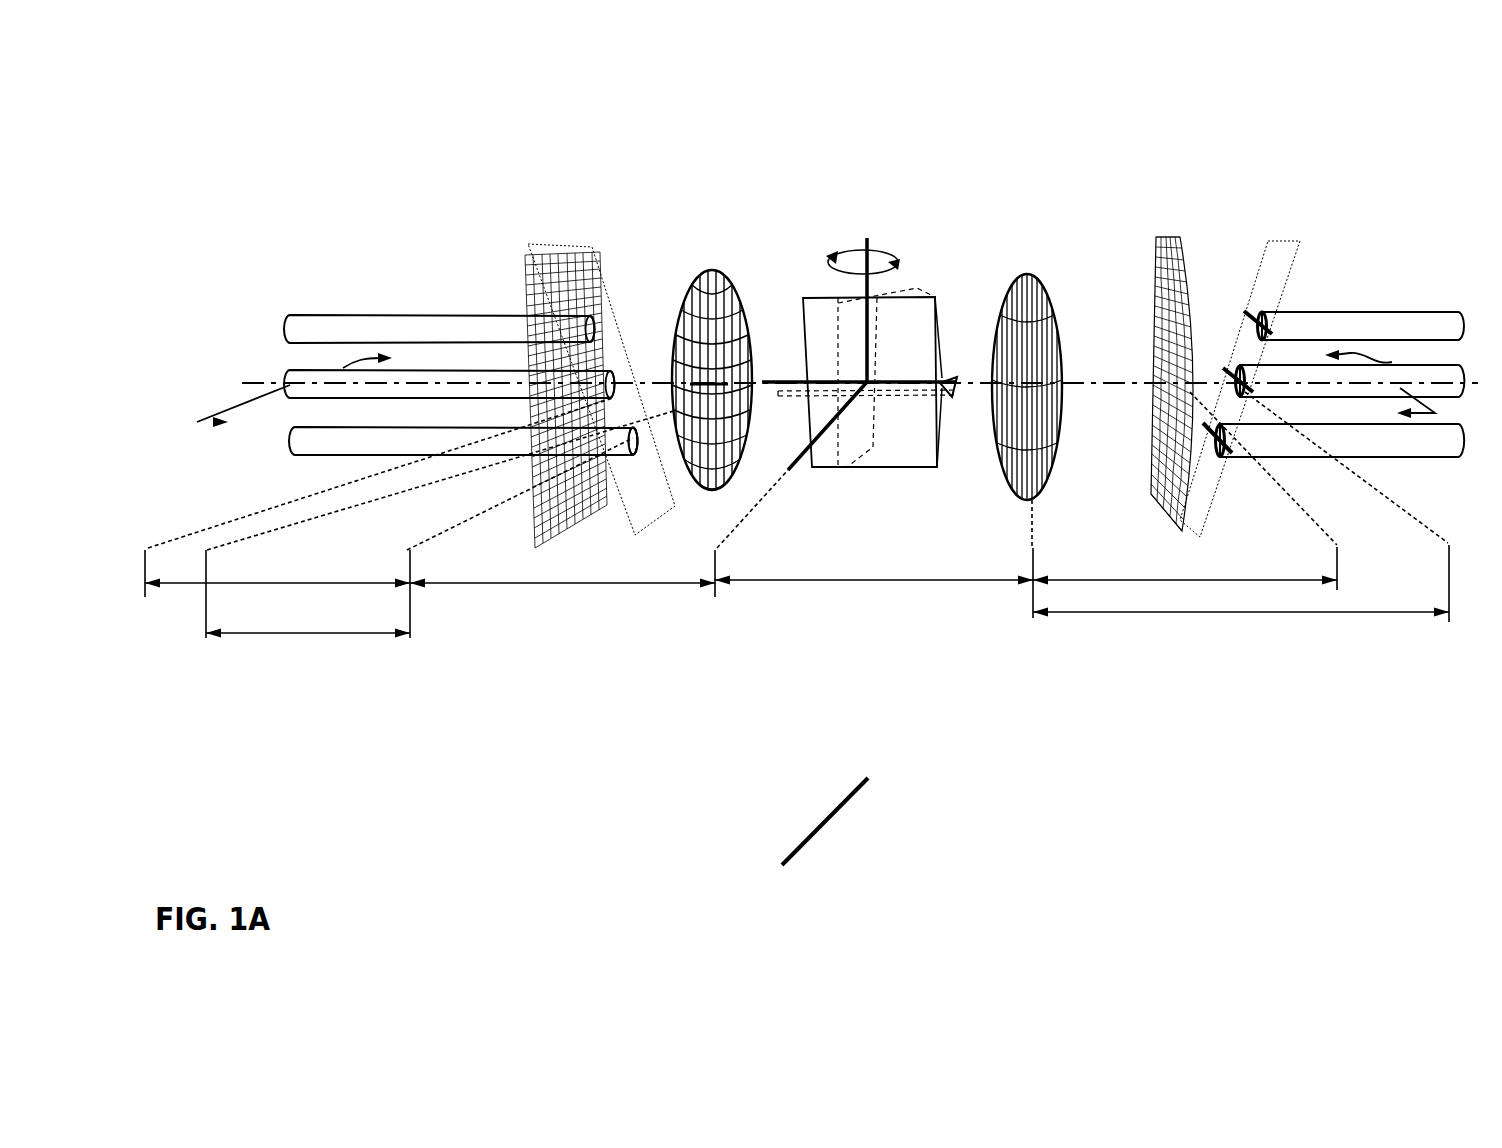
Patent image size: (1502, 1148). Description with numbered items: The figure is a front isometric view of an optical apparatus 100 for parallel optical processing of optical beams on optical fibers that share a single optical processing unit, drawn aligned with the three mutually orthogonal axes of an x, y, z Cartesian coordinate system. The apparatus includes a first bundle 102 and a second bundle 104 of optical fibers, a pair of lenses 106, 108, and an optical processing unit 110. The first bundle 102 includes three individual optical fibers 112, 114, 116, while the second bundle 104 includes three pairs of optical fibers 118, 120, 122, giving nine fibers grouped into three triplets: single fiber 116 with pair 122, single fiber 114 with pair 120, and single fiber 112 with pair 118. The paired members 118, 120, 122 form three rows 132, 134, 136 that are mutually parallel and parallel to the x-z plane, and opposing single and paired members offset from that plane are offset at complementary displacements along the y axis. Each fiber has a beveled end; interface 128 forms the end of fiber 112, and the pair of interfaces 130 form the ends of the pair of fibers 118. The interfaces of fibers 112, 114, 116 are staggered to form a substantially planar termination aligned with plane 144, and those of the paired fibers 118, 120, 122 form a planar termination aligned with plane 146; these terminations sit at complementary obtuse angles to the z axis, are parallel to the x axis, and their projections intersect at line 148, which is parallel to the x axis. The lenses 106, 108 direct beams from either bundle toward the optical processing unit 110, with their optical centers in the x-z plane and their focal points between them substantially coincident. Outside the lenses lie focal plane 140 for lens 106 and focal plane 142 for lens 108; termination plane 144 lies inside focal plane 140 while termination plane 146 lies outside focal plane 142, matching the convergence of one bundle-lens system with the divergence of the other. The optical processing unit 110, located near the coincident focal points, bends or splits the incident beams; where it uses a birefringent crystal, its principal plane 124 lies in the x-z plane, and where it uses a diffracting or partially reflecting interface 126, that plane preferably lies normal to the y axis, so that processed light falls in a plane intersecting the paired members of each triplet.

The optical apparatus 100 is at (447, 725).
The first bundle 102 is at (405, 265).
The second bundle 104 is at (1371, 262).
The lens 106 is at (718, 272).
The lens 108 is at (1030, 275).
The optical processing unit 110 is at (873, 468).
The optical fiber 112 is at (377, 437).
The optical fiber 114 is at (420, 380).
The optical fiber 116 is at (440, 330).
The pair of optical fibers 118 is at (1406, 322).
The pair of optical fibers 120 is at (1395, 363).
The pair of optical fibers 122 is at (1445, 440).
The principal plane 124 is at (960, 412).
The diffracting or reflecting interface 126 is at (916, 280).
The interface 128 is at (633, 450).
The pair of interfaces 130 is at (1268, 318).
The row 132 is at (1275, 334).
The row 134 is at (1253, 391).
The row 136 is at (1237, 460).
The focal plane 140 is at (533, 300).
The focal plane 142 is at (1175, 262).
The plane 144 is at (610, 313).
The plane 146 is at (1294, 248).
The line 148 is at (813, 830).